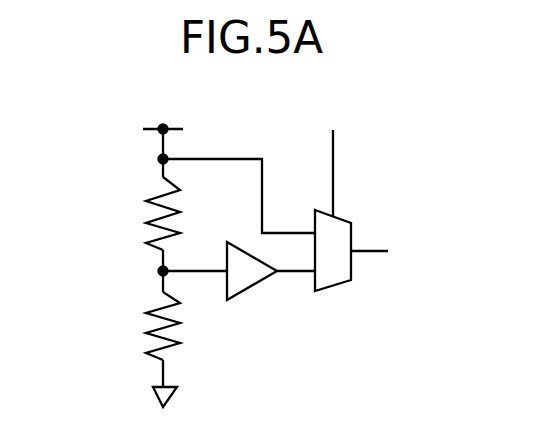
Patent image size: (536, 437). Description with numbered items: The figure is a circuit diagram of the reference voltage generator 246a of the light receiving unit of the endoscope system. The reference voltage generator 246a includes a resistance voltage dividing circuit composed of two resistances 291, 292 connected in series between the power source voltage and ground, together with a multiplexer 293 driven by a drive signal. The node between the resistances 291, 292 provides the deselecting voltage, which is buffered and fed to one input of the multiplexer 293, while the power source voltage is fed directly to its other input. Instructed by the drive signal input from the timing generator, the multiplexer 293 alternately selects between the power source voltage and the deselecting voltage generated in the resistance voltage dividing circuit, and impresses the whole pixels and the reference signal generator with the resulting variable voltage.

The resistance 291 is at (153, 230).
The resistance 292 is at (153, 343).
The multiplexer 293 is at (342, 222).
The reference voltage generator 246a is at (413, 400).